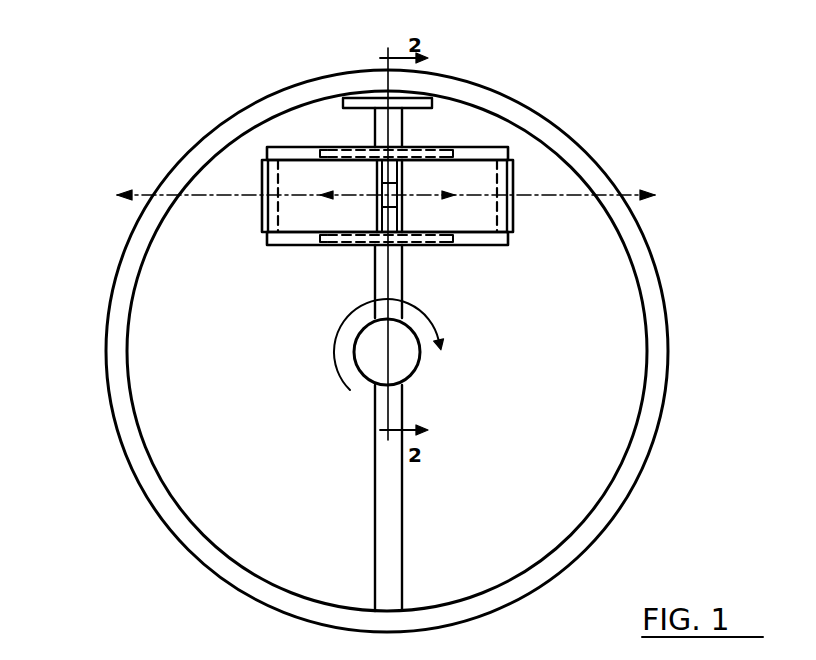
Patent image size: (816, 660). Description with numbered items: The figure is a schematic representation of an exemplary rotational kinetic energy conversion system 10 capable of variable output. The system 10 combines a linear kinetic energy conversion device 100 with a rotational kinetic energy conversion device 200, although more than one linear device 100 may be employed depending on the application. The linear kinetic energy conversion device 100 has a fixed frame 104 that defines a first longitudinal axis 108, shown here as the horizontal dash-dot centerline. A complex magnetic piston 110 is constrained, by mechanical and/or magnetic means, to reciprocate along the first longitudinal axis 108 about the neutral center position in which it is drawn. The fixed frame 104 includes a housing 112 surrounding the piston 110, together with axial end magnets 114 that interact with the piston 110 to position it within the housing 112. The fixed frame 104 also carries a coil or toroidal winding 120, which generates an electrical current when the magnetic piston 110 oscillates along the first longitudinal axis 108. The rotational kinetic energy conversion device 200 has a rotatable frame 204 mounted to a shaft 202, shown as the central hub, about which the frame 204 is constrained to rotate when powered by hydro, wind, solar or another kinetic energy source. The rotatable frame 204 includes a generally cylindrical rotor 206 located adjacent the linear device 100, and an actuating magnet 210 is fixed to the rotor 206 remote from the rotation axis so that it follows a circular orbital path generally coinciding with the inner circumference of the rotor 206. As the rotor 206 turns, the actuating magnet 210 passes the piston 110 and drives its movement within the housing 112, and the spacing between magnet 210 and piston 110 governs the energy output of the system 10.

The rotational kinetic energy conversion system 10 is at (622, 101).
The linear kinetic energy conversion device 100 is at (282, 140).
The fixed frame 104 is at (499, 147).
The first longitudinal axis 108 is at (612, 197).
The complex magnetic piston 110 is at (393, 173).
The housing 112 is at (477, 147).
The axial end magnets 114 is at (262, 183).
The coil or toroidal winding 120 is at (320, 153).
The rotational kinetic energy conversion device 200 is at (640, 493).
The shaft 202 is at (420, 350).
The rotatable frame 204 is at (108, 398).
The rotor 206 is at (286, 470).
The actuating magnet 210 is at (343, 101).